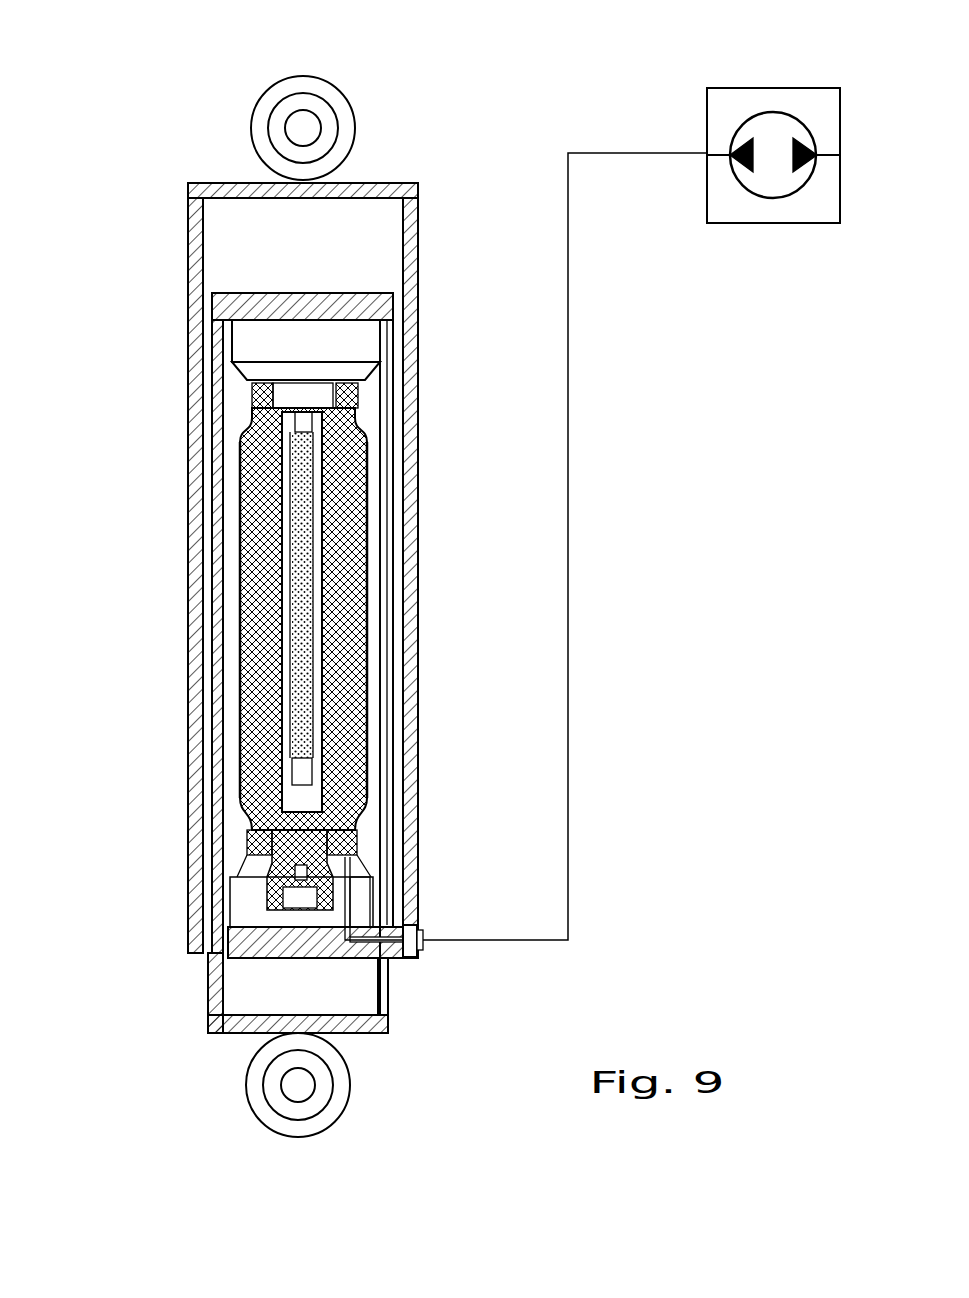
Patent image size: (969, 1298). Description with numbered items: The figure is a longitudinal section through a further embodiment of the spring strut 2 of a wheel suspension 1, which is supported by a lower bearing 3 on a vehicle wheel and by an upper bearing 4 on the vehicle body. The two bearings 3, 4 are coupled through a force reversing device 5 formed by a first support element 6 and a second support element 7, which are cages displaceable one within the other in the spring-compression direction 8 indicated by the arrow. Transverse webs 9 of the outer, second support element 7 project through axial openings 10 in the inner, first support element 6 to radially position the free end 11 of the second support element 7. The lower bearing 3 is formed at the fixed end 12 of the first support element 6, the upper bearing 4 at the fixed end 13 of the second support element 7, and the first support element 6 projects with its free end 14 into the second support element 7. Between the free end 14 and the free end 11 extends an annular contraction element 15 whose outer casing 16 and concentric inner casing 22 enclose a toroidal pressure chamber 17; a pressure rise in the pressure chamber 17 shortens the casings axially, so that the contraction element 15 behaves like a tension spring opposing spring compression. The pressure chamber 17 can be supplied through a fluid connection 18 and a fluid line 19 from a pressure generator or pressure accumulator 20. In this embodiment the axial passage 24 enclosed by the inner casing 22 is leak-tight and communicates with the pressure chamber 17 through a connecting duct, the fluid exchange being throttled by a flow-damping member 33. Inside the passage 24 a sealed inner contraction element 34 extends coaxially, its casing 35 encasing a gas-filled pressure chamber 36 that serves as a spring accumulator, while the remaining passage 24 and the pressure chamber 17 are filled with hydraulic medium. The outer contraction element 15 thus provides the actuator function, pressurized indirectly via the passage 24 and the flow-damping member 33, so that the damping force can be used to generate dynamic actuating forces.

The wheel suspension 1 is at (104, 138).
The spring strut 2 is at (165, 487).
The lower bearing 3 is at (300, 1085).
The upper bearing 4 is at (303, 128).
The force reversing device 5 is at (178, 741).
The first support element 6 is at (208, 993).
The second support element 7 is at (413, 347).
The spring-compression direction 8 is at (164, 623).
The transverse webs 9 is at (392, 962).
The axial openings 10 is at (385, 1002).
The free end of the second support element 11 is at (284, 953).
The fixed end of the first support element 12 is at (238, 1025).
The fixed end of the second support element 13 is at (378, 182).
The free end of the first support element 14 is at (215, 300).
The contraction element 15 is at (388, 507).
The casing 16 is at (368, 602).
The pressure chamber 17 is at (367, 650).
The fluid connection 18 is at (410, 920).
The fluid line 19 is at (568, 383).
The pressure generator or pressure accumulator 20 is at (820, 97).
The inner casing 22 is at (323, 703).
The axial passage 24 is at (243, 810).
The flow-damping member 33 is at (298, 900).
The inner contraction element 34 is at (242, 636).
The casing of the inner contraction element 35 is at (372, 562).
The pressure chamber of the inner contraction element 36 is at (312, 480).